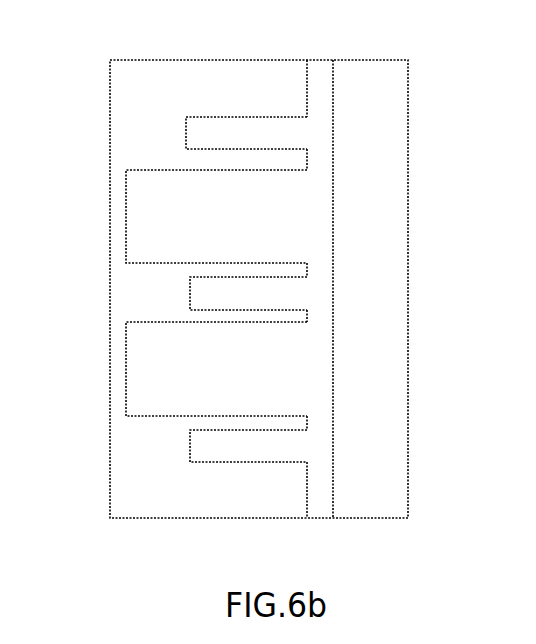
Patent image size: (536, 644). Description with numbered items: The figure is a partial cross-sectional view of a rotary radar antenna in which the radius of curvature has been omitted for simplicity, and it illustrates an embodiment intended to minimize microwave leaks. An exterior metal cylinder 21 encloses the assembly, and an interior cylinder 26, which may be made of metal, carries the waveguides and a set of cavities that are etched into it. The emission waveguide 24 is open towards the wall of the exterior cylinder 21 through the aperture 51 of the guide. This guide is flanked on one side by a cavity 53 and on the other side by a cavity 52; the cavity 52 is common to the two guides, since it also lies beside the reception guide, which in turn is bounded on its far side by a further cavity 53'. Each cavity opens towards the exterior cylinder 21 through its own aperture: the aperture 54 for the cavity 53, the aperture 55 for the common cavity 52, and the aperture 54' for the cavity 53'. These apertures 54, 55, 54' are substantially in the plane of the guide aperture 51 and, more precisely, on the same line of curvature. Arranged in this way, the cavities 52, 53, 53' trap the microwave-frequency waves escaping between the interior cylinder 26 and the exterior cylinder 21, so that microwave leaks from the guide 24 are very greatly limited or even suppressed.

The metal cylinder 21 is at (392, 60).
The emission waveguide 24 is at (168, 207).
The interior cylinder 26 is at (135, 295).
The aperture of the guide 51 is at (318, 208).
The cavity 52 is at (272, 290).
The cavity 53 is at (328, 144).
The cavity 53' is at (338, 444).
The aperture of the cavity 54 is at (315, 73).
The aperture of the cavity 54' is at (325, 506).
The aperture of the cavity 55 is at (305, 298).